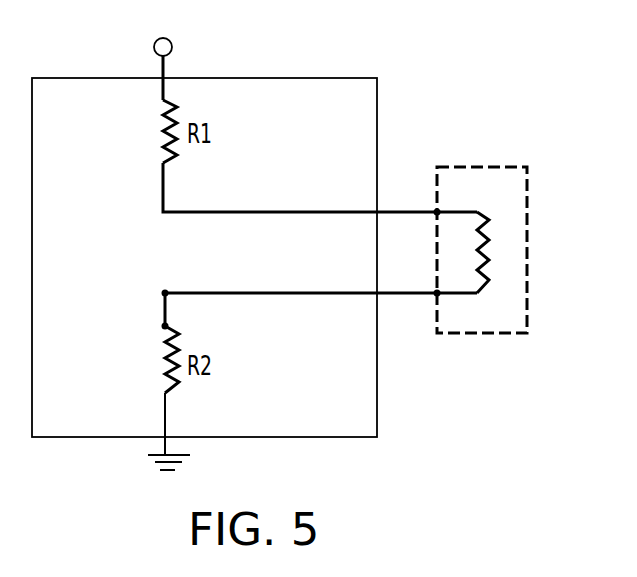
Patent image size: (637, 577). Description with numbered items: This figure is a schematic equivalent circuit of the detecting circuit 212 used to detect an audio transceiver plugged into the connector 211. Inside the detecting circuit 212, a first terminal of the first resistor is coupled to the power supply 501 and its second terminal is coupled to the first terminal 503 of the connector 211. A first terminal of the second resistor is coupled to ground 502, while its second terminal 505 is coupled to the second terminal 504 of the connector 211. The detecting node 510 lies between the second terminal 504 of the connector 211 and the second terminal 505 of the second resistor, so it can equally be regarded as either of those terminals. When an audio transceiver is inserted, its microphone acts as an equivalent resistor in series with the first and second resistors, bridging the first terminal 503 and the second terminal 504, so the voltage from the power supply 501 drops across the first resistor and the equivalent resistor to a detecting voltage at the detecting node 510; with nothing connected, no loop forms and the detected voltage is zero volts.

The power supply 501 is at (174, 44).
The ground 502 is at (190, 456).
The first terminal of the connector 503 is at (437, 212).
The second terminal of the connector 504 is at (437, 293).
The second terminal of the resistor R2 505 is at (164, 327).
The detecting node 510 is at (164, 293).
The connector 211 is at (527, 334).
The detecting circuit 212 is at (343, 437).